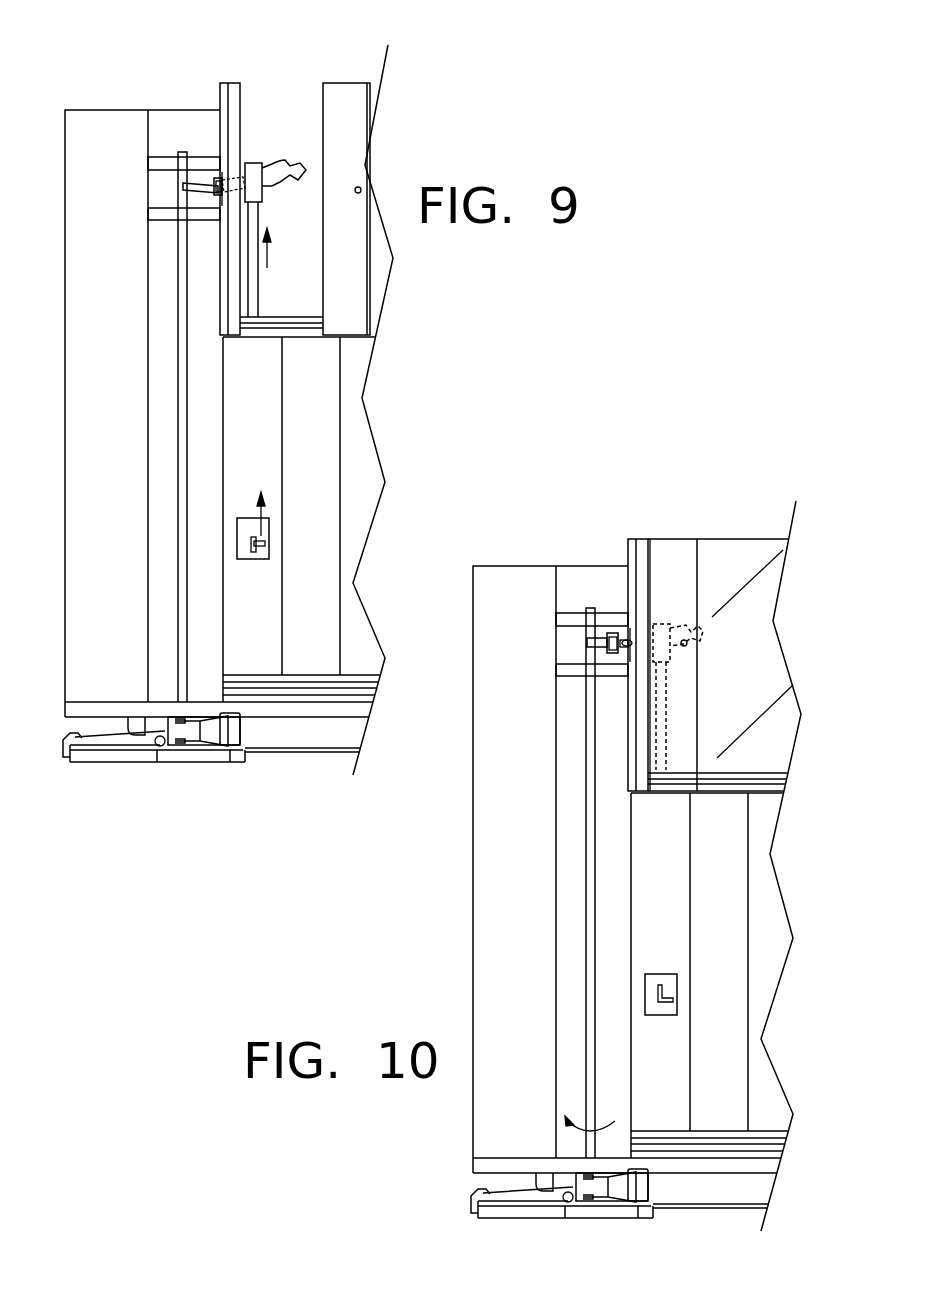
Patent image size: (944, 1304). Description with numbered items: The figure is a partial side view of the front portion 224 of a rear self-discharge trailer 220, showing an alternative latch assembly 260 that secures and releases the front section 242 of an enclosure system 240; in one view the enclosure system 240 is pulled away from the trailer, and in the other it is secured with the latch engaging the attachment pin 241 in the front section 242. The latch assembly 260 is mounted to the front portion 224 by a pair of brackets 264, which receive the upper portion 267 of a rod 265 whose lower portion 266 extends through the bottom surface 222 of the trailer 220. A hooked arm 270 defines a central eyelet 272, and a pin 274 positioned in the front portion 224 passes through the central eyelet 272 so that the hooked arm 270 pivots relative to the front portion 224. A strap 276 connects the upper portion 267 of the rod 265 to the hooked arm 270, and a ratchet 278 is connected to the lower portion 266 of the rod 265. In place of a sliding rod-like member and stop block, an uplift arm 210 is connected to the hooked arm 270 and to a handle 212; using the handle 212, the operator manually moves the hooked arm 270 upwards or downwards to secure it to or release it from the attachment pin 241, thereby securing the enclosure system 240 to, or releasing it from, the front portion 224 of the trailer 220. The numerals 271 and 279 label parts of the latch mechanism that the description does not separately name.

In FIG. 9, the uplift arm 210 is at (255, 287).
In FIG. 10, the uplift arm 210 is at (747, 716).
In FIG. 9, the handle 212 is at (267, 525).
In FIG. 10, the handle 212 is at (741, 994).
In FIG. 9, the rear self-discharge trailer 220 is at (362, 475).
In FIG. 10, the rear self-discharge trailer 220 is at (735, 975).
In FIG. 9, the bottom surface 222 is at (303, 708).
In FIG. 10, the bottom surface 222 is at (742, 1190).
In FIG. 9, the front portion 224 is at (100, 107).
In FIG. 10, the front portion 224 is at (610, 840).
In FIG. 9, the enclosure system 240 is at (383, 250).
In FIG. 10, the enclosure system 240 is at (766, 665).
In FIG. 9, the attachment pin 241 is at (363, 189).
In FIG. 10, the attachment pin 241 is at (743, 665).
In FIG. 9, the front section 242 is at (355, 104).
In FIG. 10, the front section 242 is at (725, 623).
In FIG. 9, the latch assembly 260 is at (255, 128).
In FIG. 10, the latch assembly 260 is at (708, 631).
In FIG. 9, the brackets 264 is at (158, 165).
In FIG. 10, the brackets 264 is at (558, 645).
In FIG. 9, the rod 265 is at (180, 602).
In FIG. 10, the rod 265 is at (555, 883).
In FIG. 9, the lower portion 266 is at (153, 730).
In FIG. 10, the lower portion 266 is at (525, 1223).
In FIG. 9, the upper portion 267 is at (178, 184).
In FIG. 10, the upper portion 267 is at (549, 645).
In FIG. 9, the hooked arm 270 is at (280, 163).
In FIG. 10, the hooked arm 270 is at (701, 579).
In FIG. 9, the latch body 271 is at (197, 180).
In FIG. 10, the latch body 271 is at (585, 568).
In FIG. 9, the central eyelet 272 is at (218, 178).
In FIG. 10, the central eyelet 272 is at (625, 566).
In FIG. 9, the pin 274 is at (222, 220).
In FIG. 10, the pin 274 is at (561, 707).
In FIG. 9, the strap 276 is at (220, 183).
In FIG. 10, the strap 276 is at (558, 565).
In FIG. 9, the ratchet 278 is at (233, 732).
In FIG. 10, the ratchet 278 is at (651, 1215).
In FIG. 9, the wedge 279 is at (212, 745).
In FIG. 10, the wedge 279 is at (609, 1220).